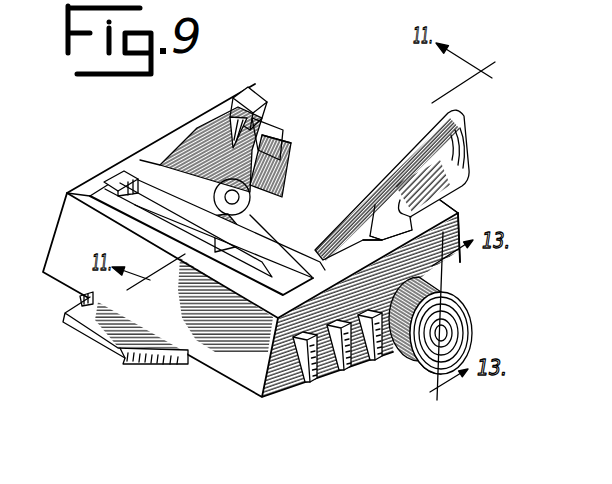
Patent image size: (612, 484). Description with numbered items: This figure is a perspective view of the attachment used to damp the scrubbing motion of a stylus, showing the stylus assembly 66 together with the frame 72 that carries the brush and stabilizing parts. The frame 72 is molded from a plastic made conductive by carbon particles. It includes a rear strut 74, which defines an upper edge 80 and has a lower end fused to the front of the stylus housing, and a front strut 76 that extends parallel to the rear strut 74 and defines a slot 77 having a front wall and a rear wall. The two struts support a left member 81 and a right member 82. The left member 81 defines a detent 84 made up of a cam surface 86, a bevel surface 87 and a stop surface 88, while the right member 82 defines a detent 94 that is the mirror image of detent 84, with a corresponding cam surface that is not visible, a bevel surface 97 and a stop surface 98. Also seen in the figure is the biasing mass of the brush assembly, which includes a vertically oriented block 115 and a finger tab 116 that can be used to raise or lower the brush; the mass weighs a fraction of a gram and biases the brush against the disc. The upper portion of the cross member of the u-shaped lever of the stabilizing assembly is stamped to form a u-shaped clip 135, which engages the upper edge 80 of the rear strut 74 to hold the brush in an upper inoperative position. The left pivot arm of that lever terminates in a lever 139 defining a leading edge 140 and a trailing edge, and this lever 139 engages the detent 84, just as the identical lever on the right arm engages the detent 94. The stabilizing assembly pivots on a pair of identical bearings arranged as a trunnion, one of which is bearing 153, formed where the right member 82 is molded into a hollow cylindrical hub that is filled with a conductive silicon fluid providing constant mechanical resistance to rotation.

The stylus assembly 66 is at (471, 136).
The frame 72 is at (277, 400).
The rear strut 74 is at (280, 227).
The front strut 76 is at (77, 193).
The slot 77 is at (115, 150).
The upper edge 80 is at (133, 173).
The left member 81 is at (173, 132).
The right member 82 is at (460, 210).
The detent 84 is at (263, 87).
The cam surface 86 is at (261, 117).
The bevel surface 87 is at (238, 110).
The stop surface 88 is at (200, 133).
The detent 94 is at (381, 164).
The bevel surface 97 is at (402, 200).
The stop surface 98 is at (377, 227).
The vertically oriented block 115 is at (103, 192).
The finger tab 116 is at (88, 345).
The u-shaped clip 135 is at (240, 226).
The lever 139 is at (278, 150).
The leading edge 140 is at (270, 142).
The bearing 153 is at (466, 322).